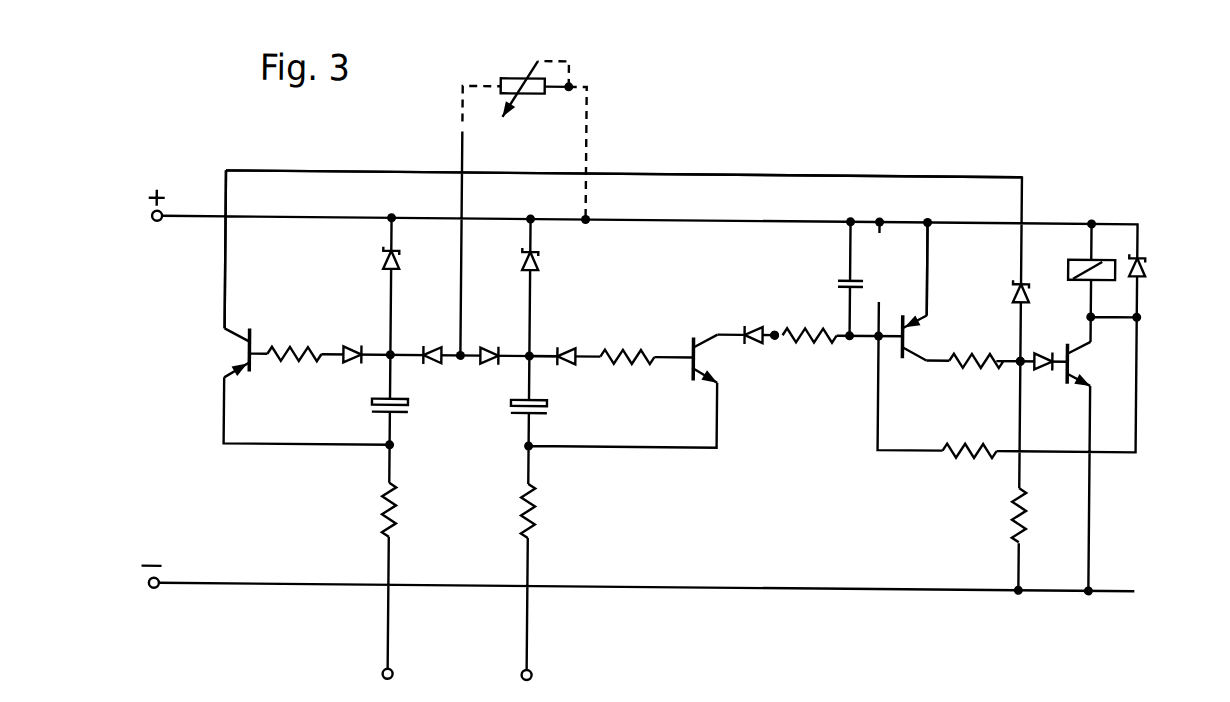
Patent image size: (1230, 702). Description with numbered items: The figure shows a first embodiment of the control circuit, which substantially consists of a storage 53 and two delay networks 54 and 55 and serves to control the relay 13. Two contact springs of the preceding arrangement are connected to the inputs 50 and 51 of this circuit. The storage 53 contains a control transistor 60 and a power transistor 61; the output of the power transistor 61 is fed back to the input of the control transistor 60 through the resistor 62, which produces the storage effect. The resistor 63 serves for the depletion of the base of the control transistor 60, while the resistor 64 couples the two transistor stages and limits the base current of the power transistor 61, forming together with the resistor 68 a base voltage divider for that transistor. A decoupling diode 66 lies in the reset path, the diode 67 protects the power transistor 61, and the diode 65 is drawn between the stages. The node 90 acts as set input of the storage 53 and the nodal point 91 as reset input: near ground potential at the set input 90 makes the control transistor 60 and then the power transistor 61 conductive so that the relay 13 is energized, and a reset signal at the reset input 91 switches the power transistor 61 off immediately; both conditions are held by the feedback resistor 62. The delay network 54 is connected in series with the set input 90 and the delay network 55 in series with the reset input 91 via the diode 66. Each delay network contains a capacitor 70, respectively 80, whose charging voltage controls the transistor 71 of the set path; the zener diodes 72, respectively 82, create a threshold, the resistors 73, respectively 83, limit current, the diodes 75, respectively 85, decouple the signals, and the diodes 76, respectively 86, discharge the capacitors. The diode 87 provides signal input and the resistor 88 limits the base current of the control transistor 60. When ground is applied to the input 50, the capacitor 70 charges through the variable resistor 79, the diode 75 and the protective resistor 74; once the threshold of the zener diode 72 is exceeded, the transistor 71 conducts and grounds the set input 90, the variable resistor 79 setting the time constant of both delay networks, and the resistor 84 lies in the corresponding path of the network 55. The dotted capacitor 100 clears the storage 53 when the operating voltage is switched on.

The relay 13 is at (1067, 274).
The input 50 is at (537, 671).
The input 51 is at (395, 672).
The storage 53 is at (996, 165).
The delay network 54 is at (575, 309).
The delay network 55 is at (351, 316).
The control transistor 60 is at (916, 330).
The power transistor 61 is at (1083, 363).
The resistor 62 is at (975, 442).
The resistor 63 is at (907, 266).
The resistor 64 is at (975, 352).
The diode 65 is at (1040, 352).
The decoupling diode 66 is at (1011, 287).
The diode 67 is at (1147, 264).
The resistor 68 is at (1028, 525).
The capacitor 70 is at (548, 404).
The transistor 71 is at (702, 334).
The zener diode 72 is at (238, 358).
The resistor 73 is at (632, 345).
The protective resistor 74 is at (536, 528).
The diode 75 is at (490, 346).
The diode 76 is at (539, 263).
The variable resistor 79 is at (532, 96).
The capacitor 80 is at (370, 405).
The zener diode 82 is at (352, 364).
The resistor 83 is at (292, 363).
The resistor 84 is at (384, 522).
The diode 85 is at (432, 347).
The diode 86 is at (404, 264).
The diode 87 is at (756, 321).
The resistor 88 is at (818, 344).
The node 90 is at (774, 341).
The reset input 91 is at (1025, 365).
The capacitor 100 is at (834, 288).